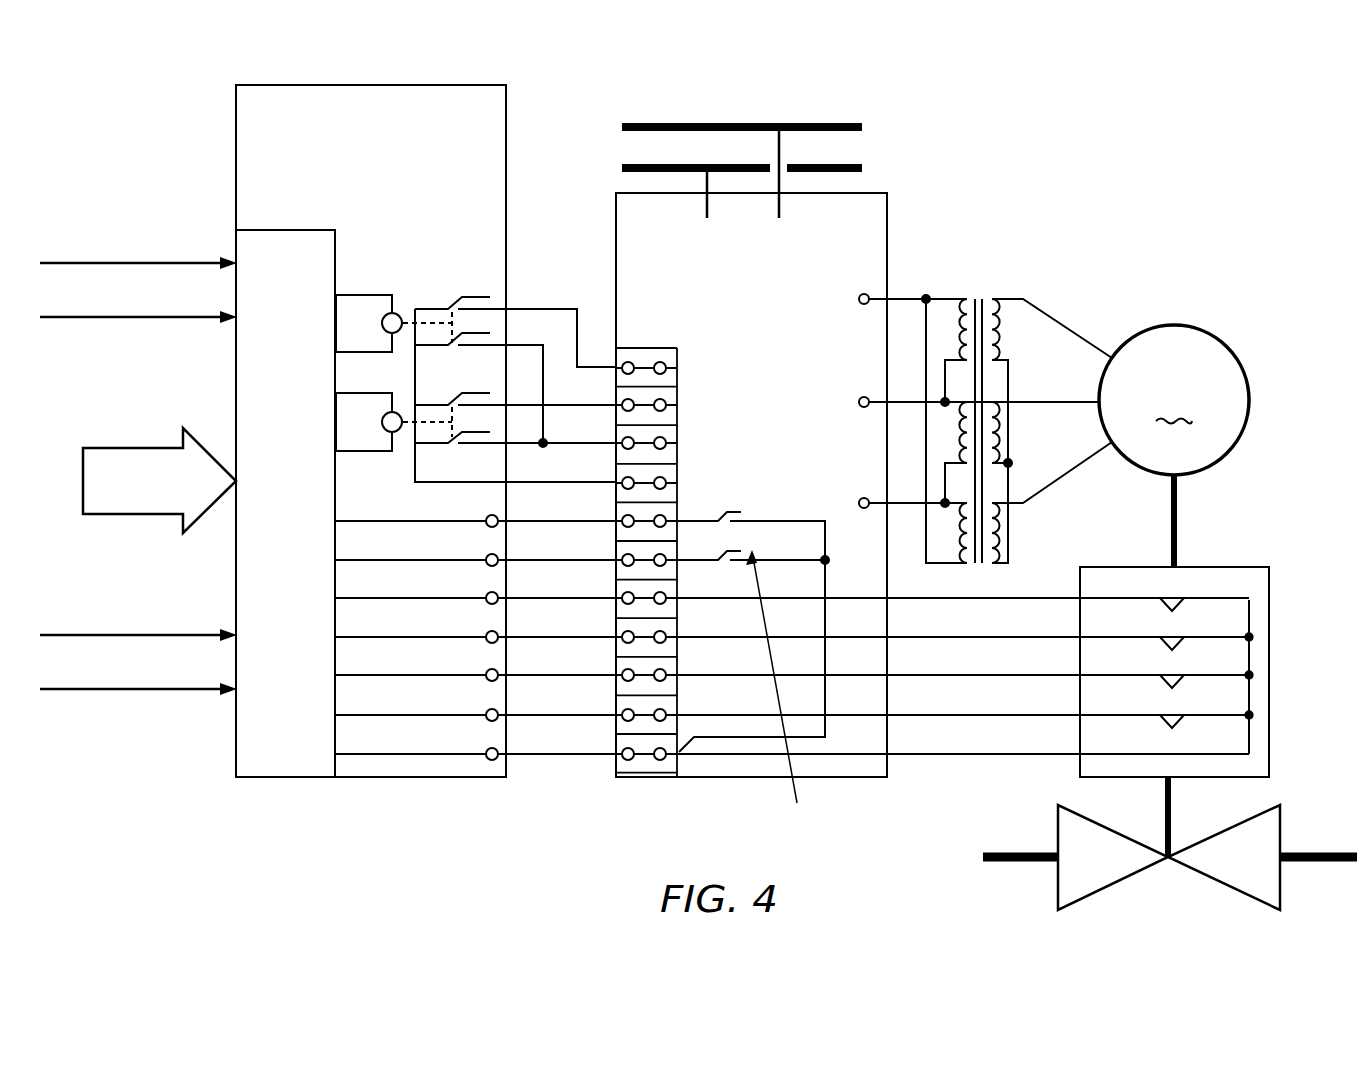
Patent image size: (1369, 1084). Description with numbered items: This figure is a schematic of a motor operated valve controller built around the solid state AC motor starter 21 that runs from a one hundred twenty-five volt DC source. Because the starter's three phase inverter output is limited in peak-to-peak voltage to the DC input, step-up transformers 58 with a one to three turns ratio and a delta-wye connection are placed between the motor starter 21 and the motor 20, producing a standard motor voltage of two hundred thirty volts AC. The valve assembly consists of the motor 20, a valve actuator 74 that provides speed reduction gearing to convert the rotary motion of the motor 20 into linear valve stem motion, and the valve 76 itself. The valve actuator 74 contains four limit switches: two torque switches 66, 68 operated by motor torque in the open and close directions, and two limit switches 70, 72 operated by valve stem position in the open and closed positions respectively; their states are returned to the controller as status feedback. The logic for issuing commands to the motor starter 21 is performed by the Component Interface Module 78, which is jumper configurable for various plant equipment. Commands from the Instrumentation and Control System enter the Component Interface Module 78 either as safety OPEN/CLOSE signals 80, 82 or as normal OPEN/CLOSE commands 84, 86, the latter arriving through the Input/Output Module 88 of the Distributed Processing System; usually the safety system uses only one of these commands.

The motor 20 is at (1233, 350).
The motor starter 21 is at (755, 312).
The transformers 58 is at (1008, 288).
The torque switch 66 is at (1172, 600).
The torque switch 68 is at (1172, 639).
The limit switch 70 is at (1172, 677).
The limit switch 72 is at (1172, 717).
The valve actuator 74 is at (1269, 663).
The valve 76 is at (1282, 825).
The Component Interface Module 78 is at (384, 177).
The safety OPEN signal 80 is at (140, 262).
The safety CLOSE signal 82 is at (148, 317).
The normal OPEN command 84 is at (133, 635).
The normal CLOSE command 86 is at (148, 689).
The Input/Output Module 88 is at (143, 448).